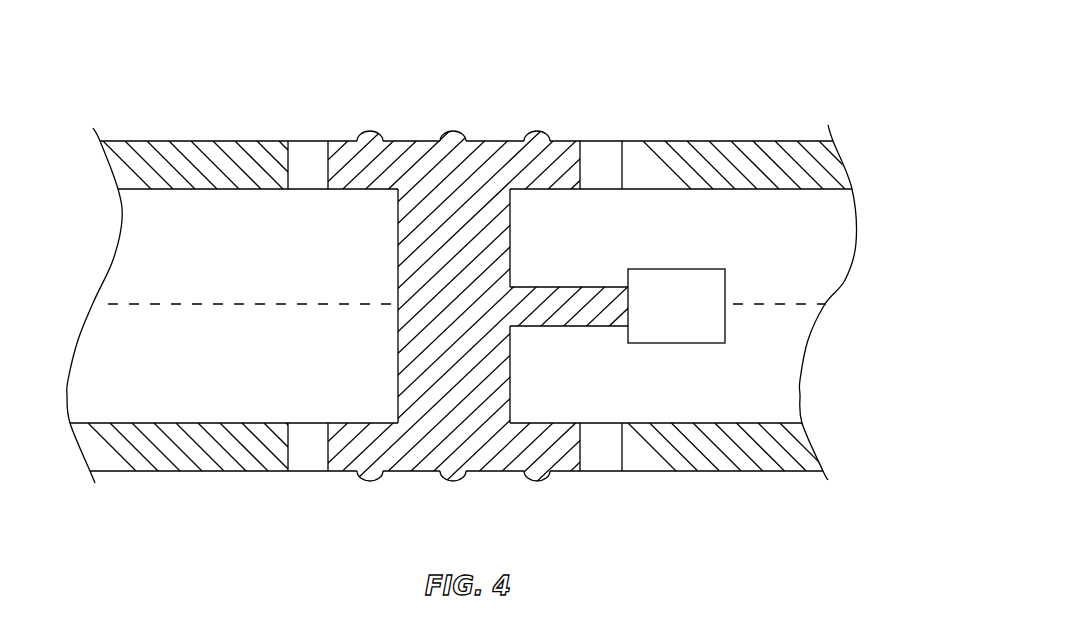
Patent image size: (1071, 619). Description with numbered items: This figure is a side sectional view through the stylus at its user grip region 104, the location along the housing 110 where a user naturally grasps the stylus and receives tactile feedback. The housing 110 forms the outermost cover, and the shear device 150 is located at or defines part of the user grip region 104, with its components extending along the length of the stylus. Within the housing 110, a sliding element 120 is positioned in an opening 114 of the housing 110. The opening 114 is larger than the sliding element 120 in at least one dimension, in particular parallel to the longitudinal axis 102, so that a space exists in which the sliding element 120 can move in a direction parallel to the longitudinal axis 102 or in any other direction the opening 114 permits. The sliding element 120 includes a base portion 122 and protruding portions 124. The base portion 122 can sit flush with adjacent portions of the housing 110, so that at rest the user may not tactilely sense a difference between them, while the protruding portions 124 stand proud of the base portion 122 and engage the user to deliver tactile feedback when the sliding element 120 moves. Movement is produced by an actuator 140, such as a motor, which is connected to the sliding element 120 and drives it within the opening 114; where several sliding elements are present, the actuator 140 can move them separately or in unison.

The longitudinal axis 102 is at (200, 303).
The user grip region 104 is at (469, 288).
The housing 110 is at (763, 141).
The opening 114 is at (598, 152).
The sliding element 120 is at (333, 141).
The base portion 122 is at (485, 141).
The protruding portion 124 is at (455, 134).
The actuator 140 is at (676, 306).
The shear device 150 is at (479, 280).